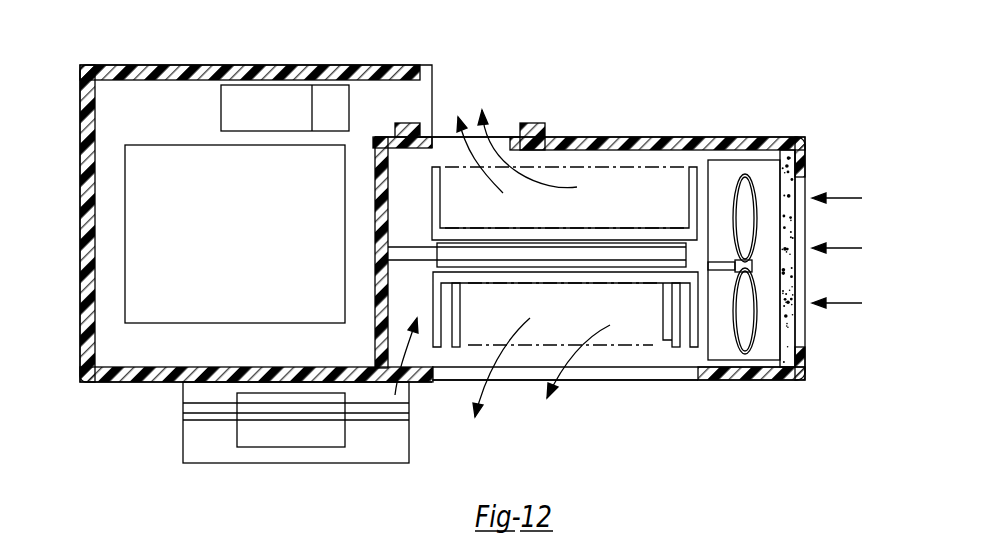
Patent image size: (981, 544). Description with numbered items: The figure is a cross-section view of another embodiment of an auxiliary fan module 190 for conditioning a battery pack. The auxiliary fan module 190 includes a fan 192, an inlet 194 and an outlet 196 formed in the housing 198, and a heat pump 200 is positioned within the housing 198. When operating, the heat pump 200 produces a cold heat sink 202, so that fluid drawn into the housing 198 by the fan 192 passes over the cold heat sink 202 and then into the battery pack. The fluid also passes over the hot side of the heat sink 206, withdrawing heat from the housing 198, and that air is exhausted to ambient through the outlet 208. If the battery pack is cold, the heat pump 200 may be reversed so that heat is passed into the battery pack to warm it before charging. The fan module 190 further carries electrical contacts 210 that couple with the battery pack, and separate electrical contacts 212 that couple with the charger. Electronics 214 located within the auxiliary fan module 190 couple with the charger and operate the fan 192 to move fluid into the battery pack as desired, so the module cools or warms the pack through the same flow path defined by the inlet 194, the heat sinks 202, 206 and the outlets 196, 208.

The auxiliary fan module 190 is at (55, 167).
The fan 192 is at (745, 190).
The inlet 194 is at (803, 333).
The outlet 196 is at (512, 137).
The housing 198 is at (85, 383).
The heat pump 200 is at (396, 362).
The cold heat sink 202 is at (697, 173).
The hot side of the heat sink 206 is at (672, 340).
The outlet 208 is at (582, 375).
The electrical contacts 210 is at (282, 108).
The electrical contacts 212 is at (243, 435).
The electronics 214 is at (143, 253).